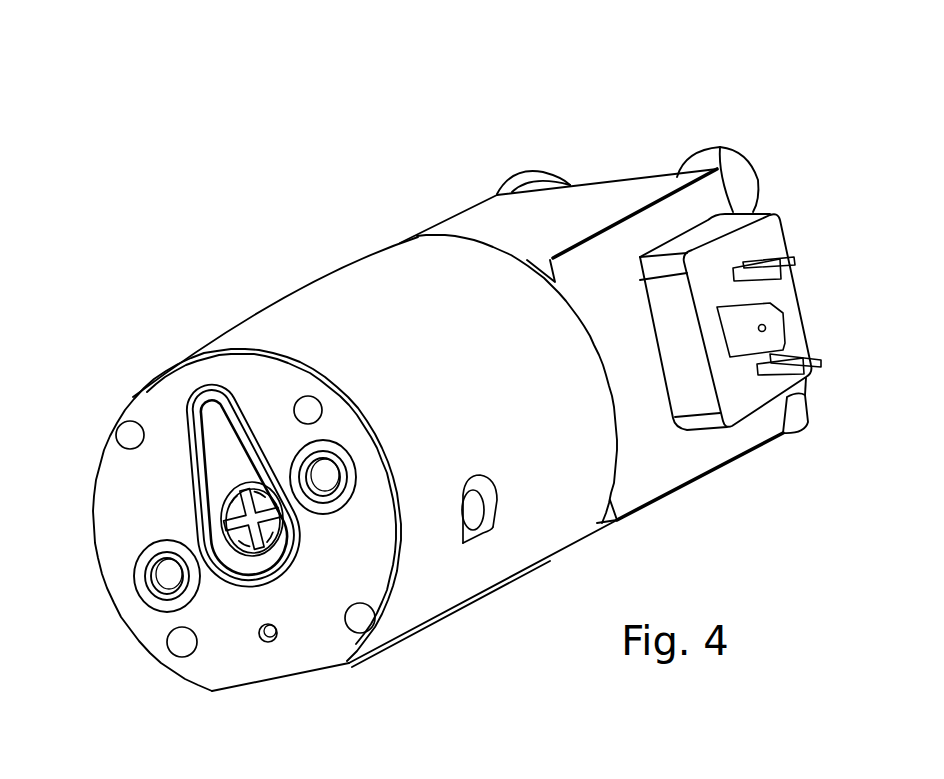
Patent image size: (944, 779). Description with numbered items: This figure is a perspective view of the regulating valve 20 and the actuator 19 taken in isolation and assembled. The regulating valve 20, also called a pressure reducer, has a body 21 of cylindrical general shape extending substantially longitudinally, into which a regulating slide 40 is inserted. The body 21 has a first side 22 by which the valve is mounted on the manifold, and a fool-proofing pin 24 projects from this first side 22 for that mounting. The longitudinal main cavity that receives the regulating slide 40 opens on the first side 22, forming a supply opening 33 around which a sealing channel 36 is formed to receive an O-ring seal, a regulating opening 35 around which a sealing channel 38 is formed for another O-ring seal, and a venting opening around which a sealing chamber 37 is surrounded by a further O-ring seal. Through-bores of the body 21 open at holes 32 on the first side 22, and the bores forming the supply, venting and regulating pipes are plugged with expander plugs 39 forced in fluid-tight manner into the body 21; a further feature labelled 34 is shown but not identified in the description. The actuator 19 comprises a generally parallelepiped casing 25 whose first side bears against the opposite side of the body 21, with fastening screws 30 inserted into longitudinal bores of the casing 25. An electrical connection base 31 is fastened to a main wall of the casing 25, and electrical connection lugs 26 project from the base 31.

The actuator 19 is at (627, 112).
The regulating valve 20 is at (244, 245).
The body 21 is at (452, 368).
The first side 22 is at (240, 672).
The fool-proofing pin 24 is at (270, 645).
The casing 25 is at (663, 477).
The electrical connection lugs 26 is at (787, 323).
The fastening screws 30 is at (542, 178).
The electrical connection base 31 is at (666, 361).
The holes 32 is at (128, 437).
The supply opening 33 is at (150, 597).
The slot 34 is at (227, 405).
The regulating opening 35 is at (332, 460).
The sealing channel 36 is at (160, 580).
The sealing chamber 37 is at (225, 455).
The sealing channel 38 is at (356, 470).
The expander plugs 39 is at (497, 502).
The regulating slide 40 is at (217, 530).